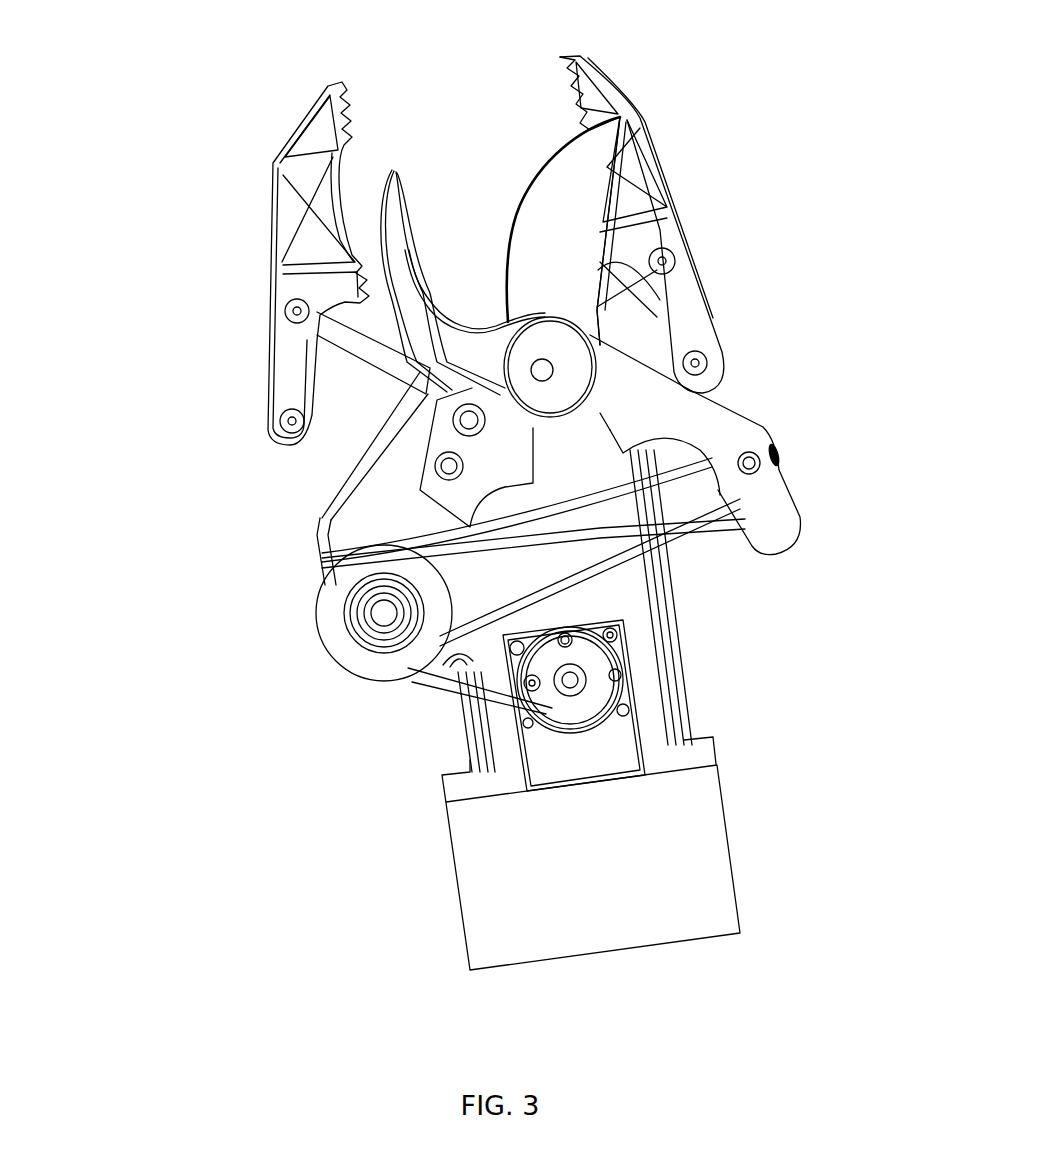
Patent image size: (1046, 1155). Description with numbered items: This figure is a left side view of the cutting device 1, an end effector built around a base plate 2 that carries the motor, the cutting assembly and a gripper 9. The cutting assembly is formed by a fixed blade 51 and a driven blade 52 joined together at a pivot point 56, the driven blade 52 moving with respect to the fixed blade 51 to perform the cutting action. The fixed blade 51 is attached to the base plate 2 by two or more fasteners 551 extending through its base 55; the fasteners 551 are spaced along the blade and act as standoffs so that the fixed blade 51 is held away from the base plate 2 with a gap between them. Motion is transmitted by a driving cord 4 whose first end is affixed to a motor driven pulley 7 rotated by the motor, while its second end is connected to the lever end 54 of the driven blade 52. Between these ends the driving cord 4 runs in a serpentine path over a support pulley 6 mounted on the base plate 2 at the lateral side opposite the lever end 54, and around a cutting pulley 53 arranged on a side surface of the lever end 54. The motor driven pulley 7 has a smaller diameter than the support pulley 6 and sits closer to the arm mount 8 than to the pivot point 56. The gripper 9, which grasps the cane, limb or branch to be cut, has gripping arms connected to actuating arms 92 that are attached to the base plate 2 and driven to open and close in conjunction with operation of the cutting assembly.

The cutting device 1 is at (135, 196).
The base plate 2 is at (650, 643).
The driving cord 4 is at (593, 573).
The support pulley 6 is at (392, 673).
The motor driven pulley 7 is at (590, 690).
The arm mount 8 is at (618, 857).
The gripper 9 is at (320, 250).
The actuating arms 92 is at (625, 303).
The fixed blade 51 is at (555, 225).
The driven blade 52 is at (432, 318).
The cutting pulley 53 is at (778, 455).
The lever end 54 is at (777, 507).
The base 55 is at (463, 498).
The fasteners 551 is at (435, 463).
The pivot point 56 is at (541, 370).